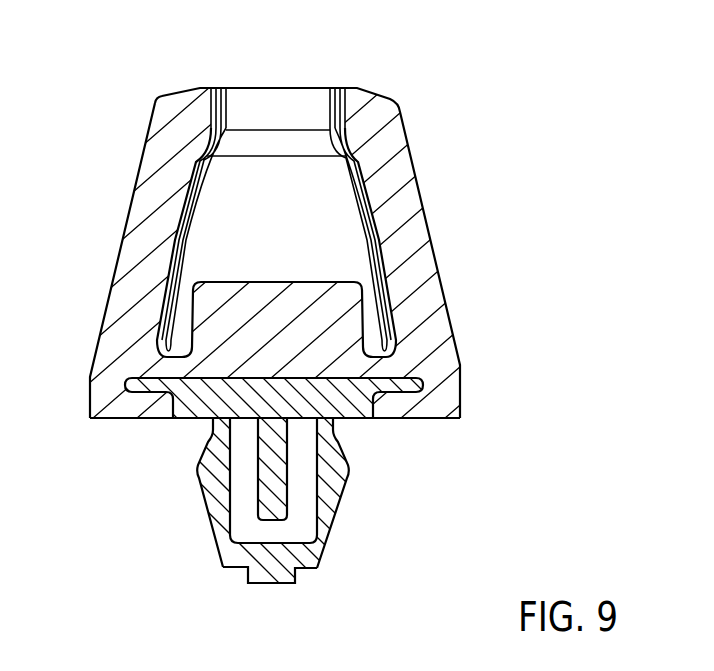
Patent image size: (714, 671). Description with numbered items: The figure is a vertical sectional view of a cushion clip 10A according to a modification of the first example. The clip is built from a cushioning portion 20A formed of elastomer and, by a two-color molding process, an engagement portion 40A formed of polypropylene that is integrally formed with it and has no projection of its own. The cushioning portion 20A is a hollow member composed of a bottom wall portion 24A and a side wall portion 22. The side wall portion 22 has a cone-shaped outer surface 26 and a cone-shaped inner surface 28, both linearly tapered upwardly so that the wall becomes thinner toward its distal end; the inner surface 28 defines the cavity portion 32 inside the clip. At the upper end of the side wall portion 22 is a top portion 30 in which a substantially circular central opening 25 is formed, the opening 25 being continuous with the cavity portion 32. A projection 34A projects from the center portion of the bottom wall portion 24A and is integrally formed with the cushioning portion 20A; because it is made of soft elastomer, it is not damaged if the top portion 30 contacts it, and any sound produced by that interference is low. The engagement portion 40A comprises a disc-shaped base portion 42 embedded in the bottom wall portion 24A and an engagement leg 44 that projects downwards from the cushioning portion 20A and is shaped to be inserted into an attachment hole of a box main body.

The cushion clip 10A is at (357, 335).
The cushioning portion 20A is at (422, 160).
The side wall portion 22 is at (150, 197).
The central opening 25 is at (262, 108).
The outer surface 26 is at (425, 217).
The inner surface 28 is at (372, 282).
The top portion 30 is at (358, 121).
The cavity portion 32 is at (232, 180).
The projection 34A is at (262, 325).
The bottom wall portion 24A is at (397, 337).
The base portion 42 is at (427, 385).
The engagement portion 40A is at (357, 481).
The engagement leg 44 is at (303, 558).